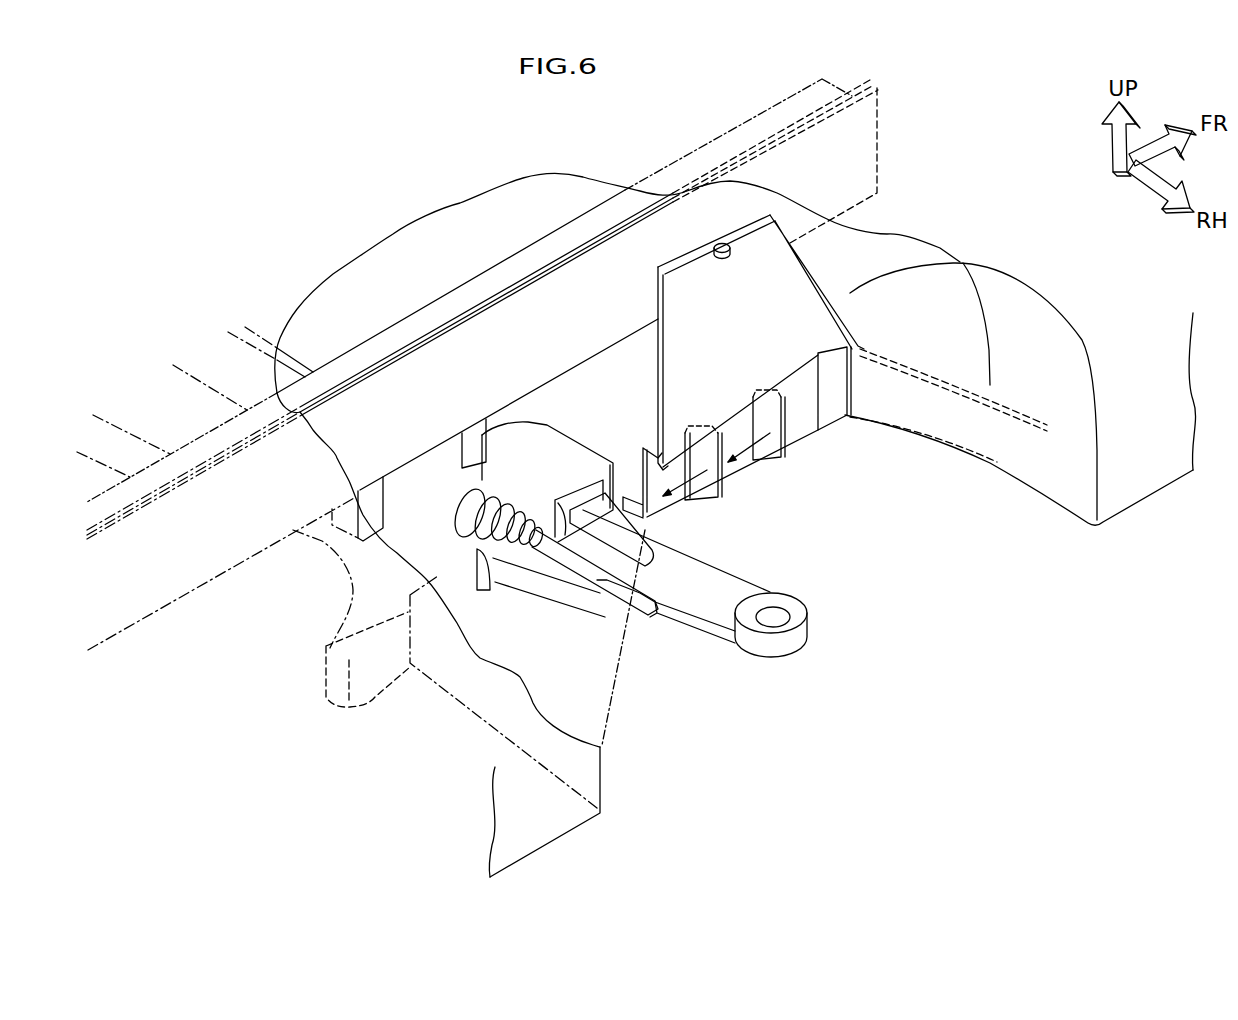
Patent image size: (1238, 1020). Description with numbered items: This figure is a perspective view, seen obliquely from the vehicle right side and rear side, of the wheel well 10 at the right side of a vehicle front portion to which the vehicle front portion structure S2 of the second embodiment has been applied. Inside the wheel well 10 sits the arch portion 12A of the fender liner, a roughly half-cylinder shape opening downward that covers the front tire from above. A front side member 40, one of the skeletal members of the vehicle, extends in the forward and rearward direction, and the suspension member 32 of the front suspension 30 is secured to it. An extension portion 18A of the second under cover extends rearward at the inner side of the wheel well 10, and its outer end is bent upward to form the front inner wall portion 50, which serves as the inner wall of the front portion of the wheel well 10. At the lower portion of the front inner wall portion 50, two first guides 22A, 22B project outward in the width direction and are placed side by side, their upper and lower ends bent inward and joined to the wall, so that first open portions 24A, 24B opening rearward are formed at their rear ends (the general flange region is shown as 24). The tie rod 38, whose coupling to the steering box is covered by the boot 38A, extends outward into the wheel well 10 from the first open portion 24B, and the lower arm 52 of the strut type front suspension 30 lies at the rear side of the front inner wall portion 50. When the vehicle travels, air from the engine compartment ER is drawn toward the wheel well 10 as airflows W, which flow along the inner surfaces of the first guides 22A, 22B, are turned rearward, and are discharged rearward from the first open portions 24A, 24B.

The front side member 40 is at (716, 139).
The engine compartment ER is at (458, 235).
The front inner wall portion 50 is at (780, 292).
The arch portion 12A is at (1037, 337).
The wheel well 10 is at (1018, 537).
The flange 24 is at (846, 420).
The first guide 22A is at (800, 437).
The first guide 22B is at (728, 488).
The first open portion 24A is at (768, 412).
The first open portion 24B is at (700, 428).
The airflow W is at (655, 462).
The extension portion 18A is at (612, 458).
The boot 38A is at (507, 500).
The tie rod 38 is at (610, 598).
The lower arm 52 is at (707, 627).
The front suspension 30 is at (297, 580).
The suspension member 32 is at (323, 675).
The vehicle front portion structure S2 is at (955, 617).